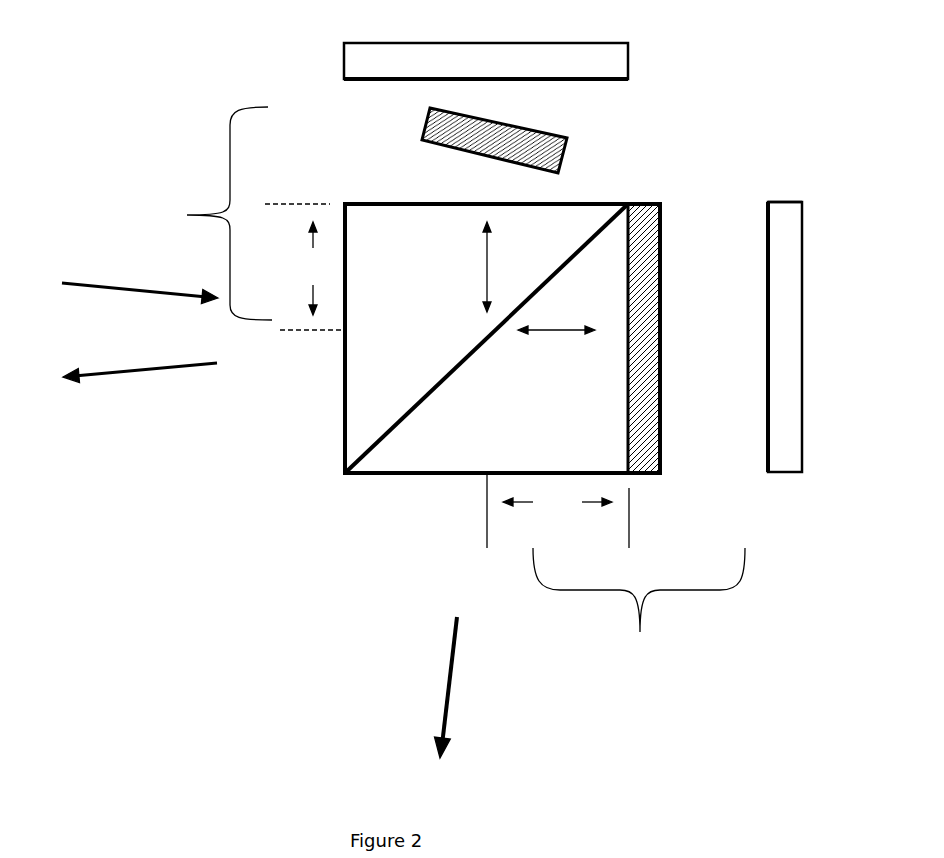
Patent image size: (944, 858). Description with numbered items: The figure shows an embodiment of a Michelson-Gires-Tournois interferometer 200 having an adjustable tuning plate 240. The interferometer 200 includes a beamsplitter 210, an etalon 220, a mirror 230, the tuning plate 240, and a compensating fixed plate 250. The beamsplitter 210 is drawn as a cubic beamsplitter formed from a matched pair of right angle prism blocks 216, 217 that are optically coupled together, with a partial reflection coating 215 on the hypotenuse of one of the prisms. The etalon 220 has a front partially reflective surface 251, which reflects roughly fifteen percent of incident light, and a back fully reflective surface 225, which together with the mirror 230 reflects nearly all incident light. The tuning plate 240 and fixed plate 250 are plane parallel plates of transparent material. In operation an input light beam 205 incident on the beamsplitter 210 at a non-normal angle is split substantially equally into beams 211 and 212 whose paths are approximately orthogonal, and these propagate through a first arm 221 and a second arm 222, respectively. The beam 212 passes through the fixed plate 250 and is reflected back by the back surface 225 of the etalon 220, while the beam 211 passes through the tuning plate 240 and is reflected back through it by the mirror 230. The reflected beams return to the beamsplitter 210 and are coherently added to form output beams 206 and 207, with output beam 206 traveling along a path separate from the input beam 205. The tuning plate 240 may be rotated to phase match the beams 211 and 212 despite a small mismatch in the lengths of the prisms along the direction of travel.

The Michelson-Gires-Tournois interferometer 200 is at (180, 123).
The input light beam 205 is at (108, 290).
The output beam 206 is at (123, 378).
The output beam 207 is at (440, 680).
The beamsplitter 210 is at (324, 494).
The light beam 211 is at (485, 252).
The light beam 212 is at (548, 332).
The partial reflection coating 215 is at (408, 410).
The right angle prism block 216 is at (345, 427).
The right angle prism block 217 is at (440, 473).
The etalon 220 is at (809, 318).
The first arm 221 is at (241, 218).
The second arm 222 is at (616, 574).
The back fully reflective surface 225 is at (788, 202).
The mirror 230 is at (344, 43).
The tuning plate 240 is at (567, 138).
The compensating fixed plate 250 is at (660, 473).
The front partially reflective surface 251 is at (662, 202).